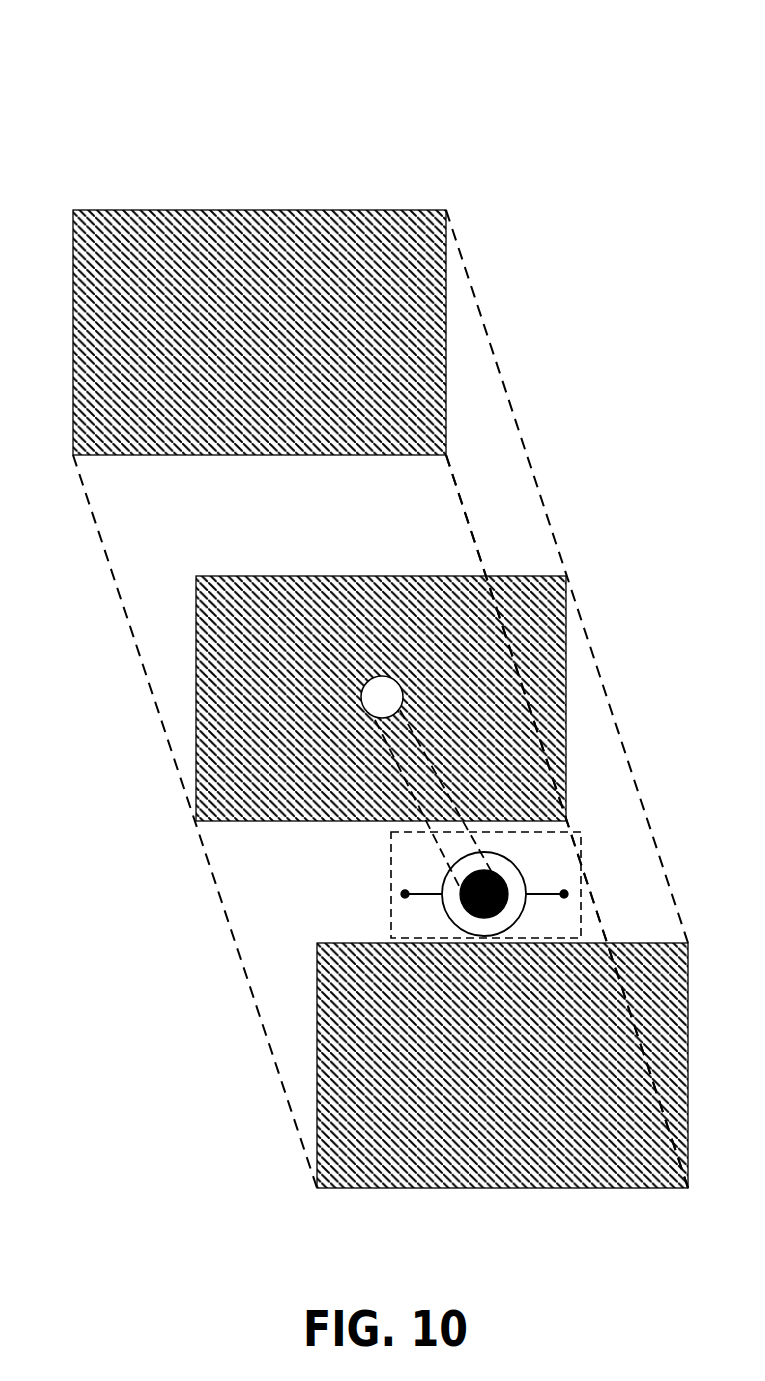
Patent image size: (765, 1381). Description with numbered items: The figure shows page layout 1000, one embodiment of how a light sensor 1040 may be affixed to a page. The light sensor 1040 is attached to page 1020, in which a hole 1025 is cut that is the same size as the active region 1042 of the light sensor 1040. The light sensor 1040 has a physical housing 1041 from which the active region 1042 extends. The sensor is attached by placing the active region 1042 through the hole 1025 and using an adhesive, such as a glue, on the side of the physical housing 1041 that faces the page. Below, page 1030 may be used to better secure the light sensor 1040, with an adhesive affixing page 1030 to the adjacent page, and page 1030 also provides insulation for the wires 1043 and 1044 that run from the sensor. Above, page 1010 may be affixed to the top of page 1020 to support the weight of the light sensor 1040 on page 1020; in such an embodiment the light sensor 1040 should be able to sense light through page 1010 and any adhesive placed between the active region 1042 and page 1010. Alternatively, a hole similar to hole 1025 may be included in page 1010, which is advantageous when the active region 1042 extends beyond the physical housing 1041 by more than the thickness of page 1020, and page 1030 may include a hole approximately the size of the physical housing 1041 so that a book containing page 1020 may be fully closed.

The page layout 1000 is at (168, 32).
The page 1010 is at (148, 202).
The page 1020 is at (240, 568).
The hole 1025 is at (363, 672).
The page 1030 is at (350, 934).
The light sensor 1040 is at (577, 842).
The physical housing 1041 is at (516, 878).
The active region 1042 is at (490, 892).
The wire 1043 is at (397, 882).
The wire 1044 is at (557, 884).